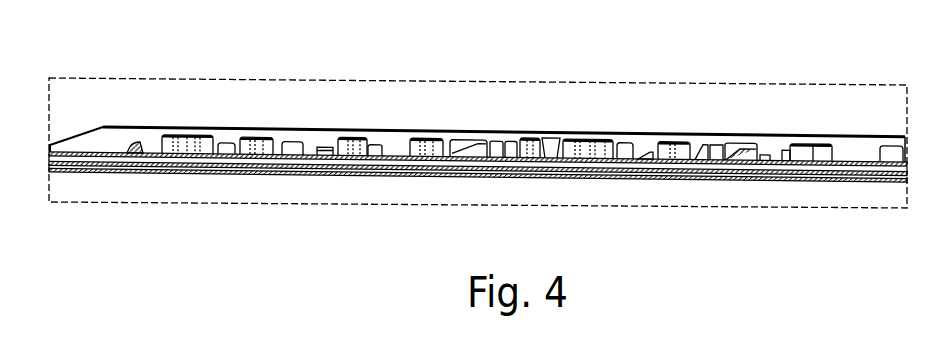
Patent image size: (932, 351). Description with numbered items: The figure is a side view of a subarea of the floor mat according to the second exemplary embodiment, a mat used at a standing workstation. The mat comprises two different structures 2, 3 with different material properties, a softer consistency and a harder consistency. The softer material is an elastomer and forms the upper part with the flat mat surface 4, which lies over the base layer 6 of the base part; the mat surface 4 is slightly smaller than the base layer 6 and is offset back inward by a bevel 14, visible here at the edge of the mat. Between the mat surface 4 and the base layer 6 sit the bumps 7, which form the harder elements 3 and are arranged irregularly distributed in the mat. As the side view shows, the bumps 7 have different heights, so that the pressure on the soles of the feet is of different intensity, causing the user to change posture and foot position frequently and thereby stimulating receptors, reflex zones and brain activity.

The softer structure 2 is at (116, 136).
The harder structure 3 is at (676, 144).
The mat surface 4 is at (517, 132).
The base layer 6 is at (228, 162).
The bump 7 is at (323, 142).
The bevel 14 is at (67, 138).